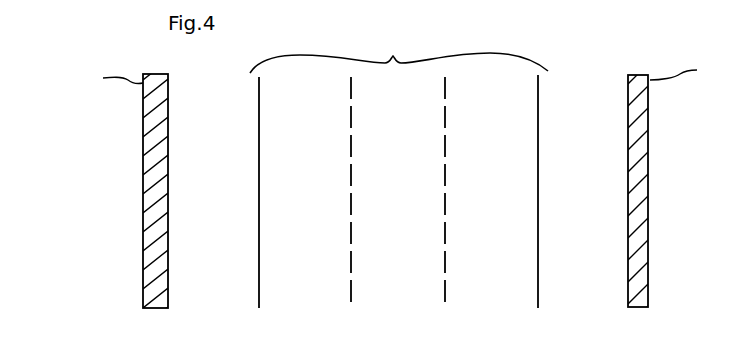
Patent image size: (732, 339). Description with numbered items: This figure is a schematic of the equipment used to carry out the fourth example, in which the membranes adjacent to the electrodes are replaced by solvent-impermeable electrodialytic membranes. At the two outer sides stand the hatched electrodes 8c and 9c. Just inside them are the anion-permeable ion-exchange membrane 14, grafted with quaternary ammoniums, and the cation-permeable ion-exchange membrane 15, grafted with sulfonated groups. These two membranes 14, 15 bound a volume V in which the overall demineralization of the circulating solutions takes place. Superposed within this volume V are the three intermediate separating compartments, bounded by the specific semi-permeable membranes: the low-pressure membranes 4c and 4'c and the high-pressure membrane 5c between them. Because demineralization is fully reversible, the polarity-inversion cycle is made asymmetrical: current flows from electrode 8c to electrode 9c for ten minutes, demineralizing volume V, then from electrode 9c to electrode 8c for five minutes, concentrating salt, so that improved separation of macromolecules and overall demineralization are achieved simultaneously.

The electrode 8c is at (150, 212).
The electrode 9c is at (632, 206).
The anion-permeable electrodialytic membrane 14 is at (262, 160).
The cation-permeable electrodialytic membrane 15 is at (541, 160).
The low-pressure semi-permeable membrane 4c is at (320, 210).
The high-pressure semi-permeable membrane 5c is at (422, 207).
The low-pressure semi-permeable membrane 4'c is at (492, 248).
The volume V is at (399, 50).